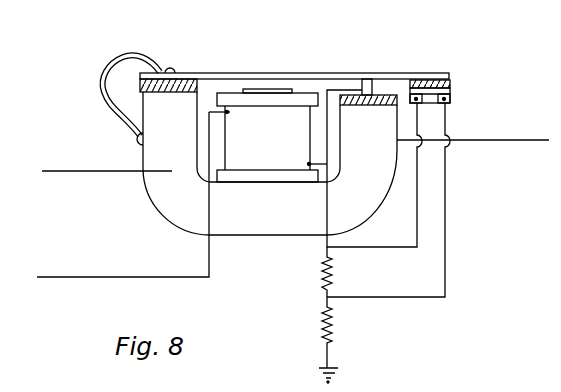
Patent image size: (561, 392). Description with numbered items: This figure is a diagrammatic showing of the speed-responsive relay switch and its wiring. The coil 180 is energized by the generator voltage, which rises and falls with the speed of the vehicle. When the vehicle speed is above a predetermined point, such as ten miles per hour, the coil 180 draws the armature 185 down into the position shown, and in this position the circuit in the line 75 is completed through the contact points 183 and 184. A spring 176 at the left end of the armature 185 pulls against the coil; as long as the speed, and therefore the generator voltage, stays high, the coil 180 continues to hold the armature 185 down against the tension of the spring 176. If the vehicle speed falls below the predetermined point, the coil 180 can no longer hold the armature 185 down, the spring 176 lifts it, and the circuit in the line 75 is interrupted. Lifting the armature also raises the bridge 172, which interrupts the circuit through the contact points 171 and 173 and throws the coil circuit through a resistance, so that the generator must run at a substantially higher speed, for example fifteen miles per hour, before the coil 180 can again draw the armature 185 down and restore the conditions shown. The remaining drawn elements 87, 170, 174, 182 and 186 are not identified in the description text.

The line 75 is at (77, 172).
The lead wire 87 is at (88, 277).
The lead wire loop 170 is at (385, 247).
The contact point 171 is at (450, 90).
The bridge 172 is at (450, 85).
The contact point 173 is at (422, 99).
The lead wire 174 is at (383, 298).
The spring 176 is at (103, 81).
The coil 180 is at (242, 148).
The resistor 182 is at (323, 332).
The contact point 183 is at (375, 93).
The contact point 184 is at (362, 80).
The armature 185 is at (253, 75).
The resistor 186 is at (323, 278).